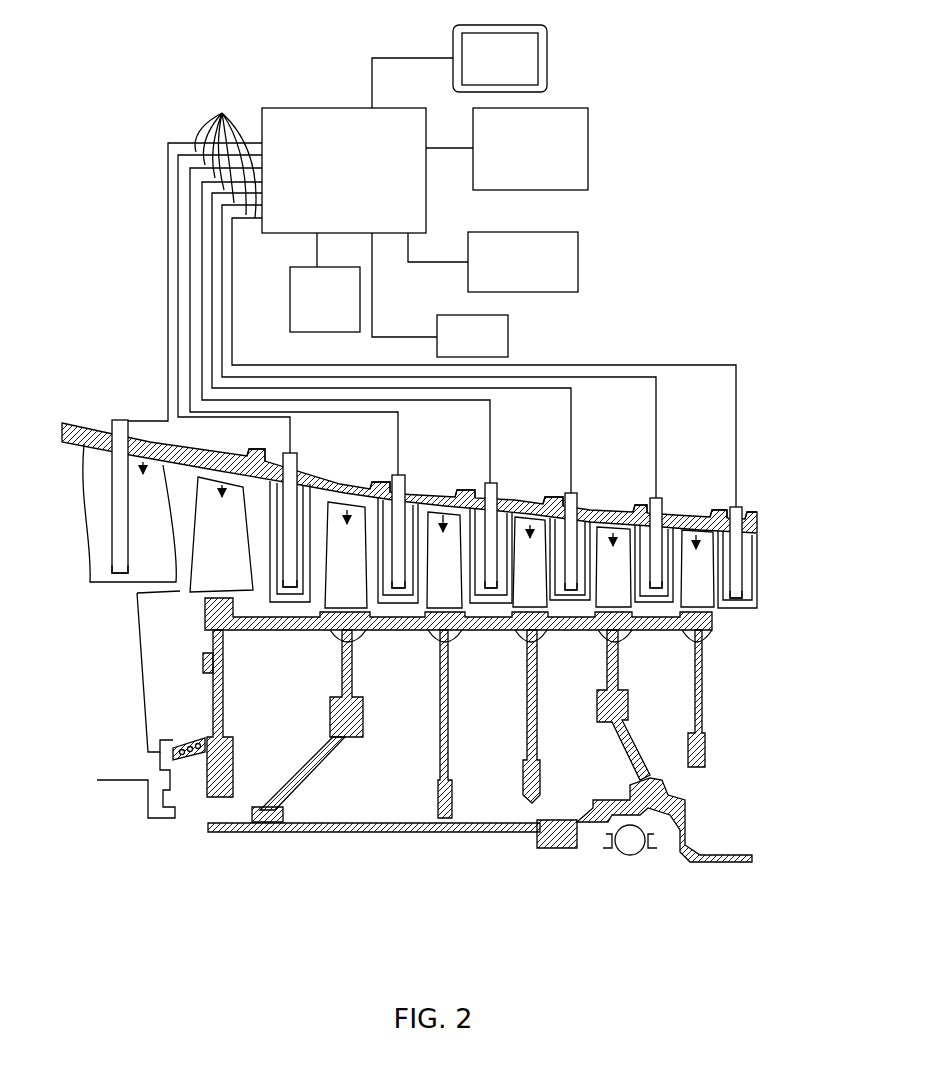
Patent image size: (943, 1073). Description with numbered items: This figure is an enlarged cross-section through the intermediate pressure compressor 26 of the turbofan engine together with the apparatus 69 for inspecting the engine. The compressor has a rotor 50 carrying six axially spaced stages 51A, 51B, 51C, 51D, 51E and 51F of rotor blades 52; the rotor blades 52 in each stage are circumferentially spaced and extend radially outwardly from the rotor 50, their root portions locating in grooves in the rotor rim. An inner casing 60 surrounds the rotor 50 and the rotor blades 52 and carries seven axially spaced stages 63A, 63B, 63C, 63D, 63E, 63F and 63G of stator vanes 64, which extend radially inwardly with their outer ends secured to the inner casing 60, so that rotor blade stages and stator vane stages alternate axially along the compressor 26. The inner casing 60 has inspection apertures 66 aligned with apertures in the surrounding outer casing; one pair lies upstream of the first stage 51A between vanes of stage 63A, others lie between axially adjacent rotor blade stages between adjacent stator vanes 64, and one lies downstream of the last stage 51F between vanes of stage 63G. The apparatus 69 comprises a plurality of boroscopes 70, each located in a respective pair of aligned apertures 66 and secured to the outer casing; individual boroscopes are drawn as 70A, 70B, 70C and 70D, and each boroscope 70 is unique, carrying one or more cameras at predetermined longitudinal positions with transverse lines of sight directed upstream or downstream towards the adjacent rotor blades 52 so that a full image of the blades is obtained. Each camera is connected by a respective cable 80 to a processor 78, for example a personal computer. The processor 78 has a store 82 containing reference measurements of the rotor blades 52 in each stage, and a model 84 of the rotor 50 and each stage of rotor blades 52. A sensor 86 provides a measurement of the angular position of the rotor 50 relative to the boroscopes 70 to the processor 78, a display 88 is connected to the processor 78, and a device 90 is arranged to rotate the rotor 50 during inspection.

The intermediate pressure compressor 26 is at (662, 492).
The rotor 50 is at (455, 632).
The first stage of rotor blades 51A is at (208, 467).
The second stage of rotor blades 51B is at (348, 493).
The third stage of rotor blades 51C is at (450, 497).
The fourth stage of rotor blades 51D is at (530, 510).
The fifth stage of rotor blades 51E is at (612, 510).
The last stage of rotor blades 51F is at (695, 517).
The rotor blade 52 is at (452, 542).
The inner casing 60 is at (280, 460).
The first stage of stator vanes 63A is at (122, 419).
The second stage of stator vanes 63B is at (298, 610).
The third stage of stator vanes 63C is at (406, 612).
The fourth stage of stator vanes 63D is at (492, 612).
The fifth stage of stator vanes 63E is at (571, 608).
The sixth stage of stator vanes 63F is at (657, 610).
The last stage of stator vanes 63G is at (740, 612).
The stator vane 64 is at (130, 576).
The inspection aperture 66 is at (100, 447).
The apparatus for inspecting a gas turbine engine 69 is at (158, 124).
The boroscope 70 is at (475, 604).
The stator vane 70A is at (122, 583).
The stator vane 70B is at (268, 602).
The stator vane 70C is at (380, 604).
The stator vane 70D is at (758, 590).
The processor 78 is at (320, 108).
The cable 80 is at (432, 296).
The store 82 is at (588, 148).
The model 84 is at (578, 262).
The sensor 86 is at (508, 337).
The display 88 is at (547, 58).
The device 90 is at (290, 297).